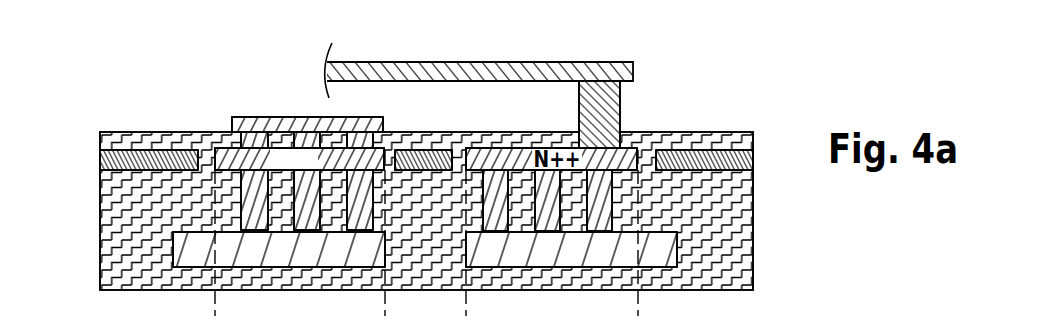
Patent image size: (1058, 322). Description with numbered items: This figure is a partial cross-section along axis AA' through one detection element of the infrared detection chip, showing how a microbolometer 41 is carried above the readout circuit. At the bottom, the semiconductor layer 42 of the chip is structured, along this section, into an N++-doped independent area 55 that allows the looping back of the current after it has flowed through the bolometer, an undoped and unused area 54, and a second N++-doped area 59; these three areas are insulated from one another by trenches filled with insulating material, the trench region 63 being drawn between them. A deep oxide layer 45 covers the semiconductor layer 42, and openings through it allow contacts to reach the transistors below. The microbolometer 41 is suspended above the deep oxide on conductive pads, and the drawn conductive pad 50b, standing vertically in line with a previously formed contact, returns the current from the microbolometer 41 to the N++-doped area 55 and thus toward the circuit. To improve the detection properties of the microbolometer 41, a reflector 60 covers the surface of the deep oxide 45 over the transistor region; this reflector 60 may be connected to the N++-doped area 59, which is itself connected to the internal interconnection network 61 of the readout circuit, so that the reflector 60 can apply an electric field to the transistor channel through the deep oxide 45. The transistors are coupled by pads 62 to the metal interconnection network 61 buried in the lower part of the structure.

The microbolometer 41 is at (482, 63).
The semiconductor layer 42 is at (102, 161).
The deep oxide layer 45 is at (133, 138).
The conductive pad 50b is at (627, 103).
The undoped and unused area 54 is at (428, 150).
The N++-doped area 55 is at (632, 150).
The second N++-doped area 59 is at (232, 147).
The reflector 60 is at (241, 128).
The interconnection network 61 is at (174, 243).
The pads 62 is at (612, 197).
The trench gate (left device) 63 is at (297, 143).